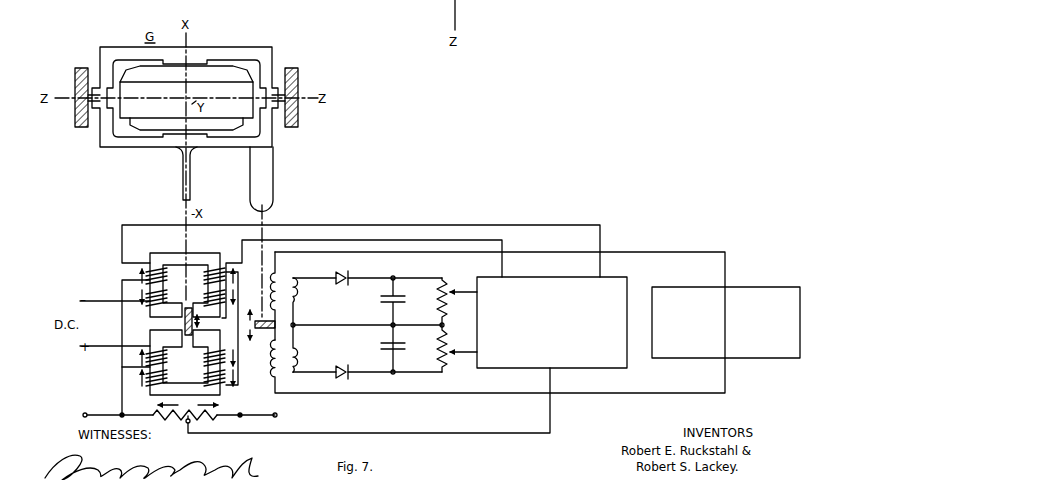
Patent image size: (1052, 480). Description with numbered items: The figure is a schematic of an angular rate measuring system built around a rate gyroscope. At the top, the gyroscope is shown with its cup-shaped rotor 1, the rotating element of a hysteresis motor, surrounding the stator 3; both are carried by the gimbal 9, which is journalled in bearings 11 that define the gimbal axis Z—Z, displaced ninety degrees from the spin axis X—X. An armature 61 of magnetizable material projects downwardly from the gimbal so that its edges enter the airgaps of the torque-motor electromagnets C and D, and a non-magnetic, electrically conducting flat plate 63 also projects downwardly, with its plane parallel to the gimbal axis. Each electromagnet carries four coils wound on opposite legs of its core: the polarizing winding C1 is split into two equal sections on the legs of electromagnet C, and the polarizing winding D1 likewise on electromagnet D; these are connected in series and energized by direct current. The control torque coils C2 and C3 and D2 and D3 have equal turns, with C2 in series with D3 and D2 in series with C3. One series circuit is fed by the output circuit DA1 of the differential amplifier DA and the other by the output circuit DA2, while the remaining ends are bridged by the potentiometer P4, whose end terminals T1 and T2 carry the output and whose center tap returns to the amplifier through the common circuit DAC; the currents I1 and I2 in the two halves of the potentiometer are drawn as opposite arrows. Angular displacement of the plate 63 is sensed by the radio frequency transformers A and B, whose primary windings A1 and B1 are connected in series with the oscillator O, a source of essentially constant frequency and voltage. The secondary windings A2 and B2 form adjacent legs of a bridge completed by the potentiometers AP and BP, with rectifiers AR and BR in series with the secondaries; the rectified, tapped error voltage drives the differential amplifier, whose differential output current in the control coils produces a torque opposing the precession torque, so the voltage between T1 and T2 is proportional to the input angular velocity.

The rotor 1 is at (227, 90).
The stator 3 is at (232, 125).
The gimbal 9 is at (133, 145).
The bearings 11 is at (75, 115).
The armature 61 is at (183, 178).
The flat plate 63 is at (273, 181).
The electromagnet C is at (176, 258).
The primary winding C1 is at (160, 292).
The control torque coil C2 is at (160, 268).
The control torque coil C3 is at (212, 268).
The electromagnet D is at (150, 390).
The primary winding D1 is at (215, 354).
The control torque coil D2 is at (222, 378).
The control torque coil D3 is at (148, 364).
The radio frequency transformer A is at (288, 267).
The primary winding A1 is at (271, 275).
The secondary winding A2 is at (298, 297).
The rectifier AR is at (342, 285).
The potentiometer AP is at (440, 304).
The radio frequency transformer B is at (289, 388).
The primary winding B1 is at (271, 355).
The secondary winding B2 is at (298, 352).
The rectifier BR is at (343, 366).
The potentiometer BP is at (440, 348).
The differential amplifier DA is at (606, 387).
The output circuit DA1 is at (600, 262).
The output circuit DA2 is at (502, 262).
The common circuit DAC is at (377, 433).
The oscillator O is at (775, 382).
The potentiometer P4 is at (204, 417).
The terminal T1 is at (85, 413).
The terminal T2 is at (275, 413).
The current I1 is at (153, 407).
The current I2 is at (221, 407).